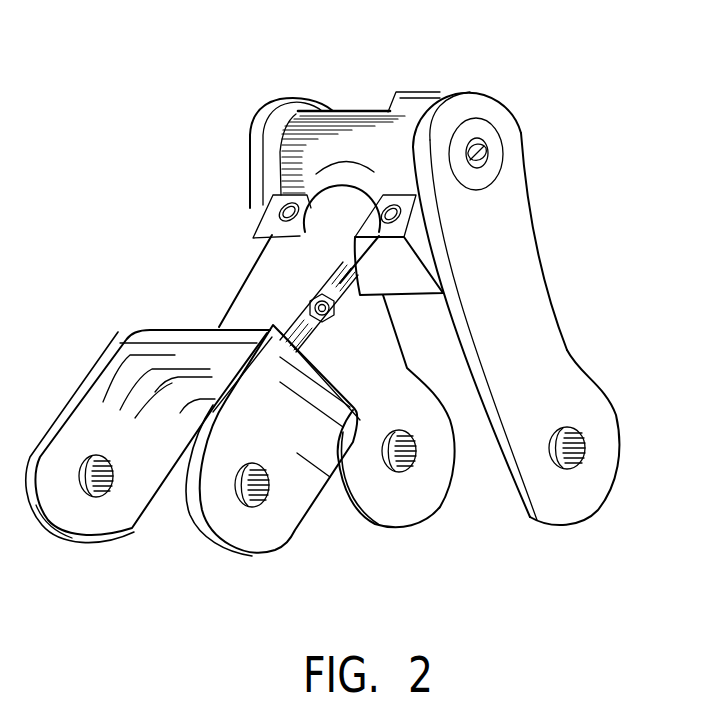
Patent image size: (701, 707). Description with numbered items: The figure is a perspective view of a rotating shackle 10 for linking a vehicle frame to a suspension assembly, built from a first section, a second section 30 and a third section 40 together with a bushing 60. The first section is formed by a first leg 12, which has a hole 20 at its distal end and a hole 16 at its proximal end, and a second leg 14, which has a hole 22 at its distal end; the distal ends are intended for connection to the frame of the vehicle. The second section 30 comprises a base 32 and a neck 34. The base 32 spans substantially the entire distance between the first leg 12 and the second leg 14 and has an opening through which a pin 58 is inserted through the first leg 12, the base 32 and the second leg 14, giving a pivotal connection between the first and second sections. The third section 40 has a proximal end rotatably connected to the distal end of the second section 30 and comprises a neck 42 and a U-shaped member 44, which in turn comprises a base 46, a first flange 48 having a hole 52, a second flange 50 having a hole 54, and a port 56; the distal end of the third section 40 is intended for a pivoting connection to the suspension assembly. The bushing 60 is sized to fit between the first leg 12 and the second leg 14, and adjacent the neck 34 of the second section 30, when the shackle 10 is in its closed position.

The rotating shackle 10 is at (92, 167).
The first leg 12 is at (532, 287).
The second leg 14 is at (444, 488).
The hole 16 is at (495, 154).
The hole 20 is at (585, 461).
The hole 22 is at (402, 466).
The second section 30 is at (333, 174).
The base 32 is at (352, 111).
The neck 34 is at (275, 199).
The third section 40 is at (218, 326).
The neck 42 is at (256, 283).
The U-shaped member 44 is at (110, 397).
The base 46 is at (167, 337).
The first flange 48 is at (290, 520).
The second flange 50 is at (130, 520).
The hole 52 is at (252, 498).
The hole 54 is at (93, 503).
The port 56 is at (337, 309).
The pin 58 is at (476, 150).
The bushing 60 is at (412, 281).